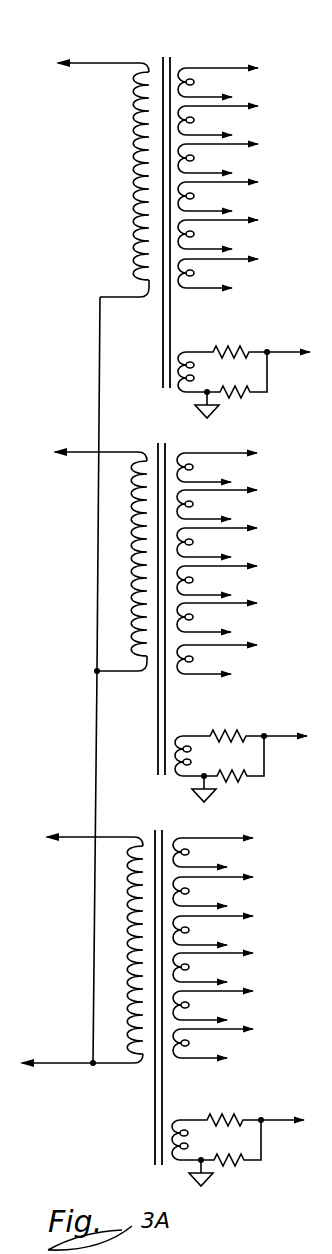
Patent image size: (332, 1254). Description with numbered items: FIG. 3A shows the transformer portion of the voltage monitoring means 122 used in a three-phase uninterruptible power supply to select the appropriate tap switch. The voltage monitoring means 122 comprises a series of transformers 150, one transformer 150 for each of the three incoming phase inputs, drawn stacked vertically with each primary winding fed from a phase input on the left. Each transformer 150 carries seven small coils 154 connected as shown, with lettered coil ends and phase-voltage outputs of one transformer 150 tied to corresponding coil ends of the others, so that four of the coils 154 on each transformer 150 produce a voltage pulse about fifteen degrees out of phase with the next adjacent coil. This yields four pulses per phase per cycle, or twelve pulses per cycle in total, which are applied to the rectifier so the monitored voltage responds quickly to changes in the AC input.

The voltage monitoring means 122 is at (283, 36).
The transformer 150 is at (160, 58).
The small coil 154 is at (185, 66).